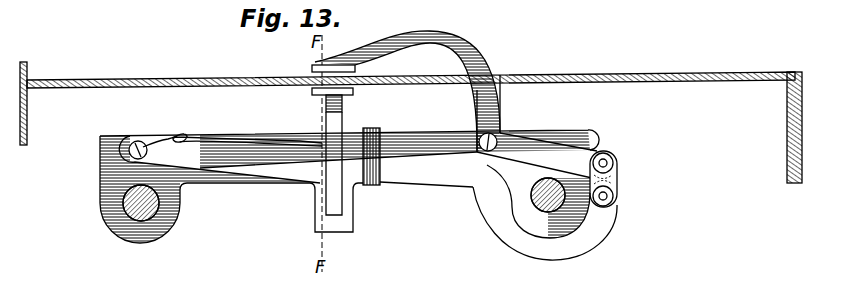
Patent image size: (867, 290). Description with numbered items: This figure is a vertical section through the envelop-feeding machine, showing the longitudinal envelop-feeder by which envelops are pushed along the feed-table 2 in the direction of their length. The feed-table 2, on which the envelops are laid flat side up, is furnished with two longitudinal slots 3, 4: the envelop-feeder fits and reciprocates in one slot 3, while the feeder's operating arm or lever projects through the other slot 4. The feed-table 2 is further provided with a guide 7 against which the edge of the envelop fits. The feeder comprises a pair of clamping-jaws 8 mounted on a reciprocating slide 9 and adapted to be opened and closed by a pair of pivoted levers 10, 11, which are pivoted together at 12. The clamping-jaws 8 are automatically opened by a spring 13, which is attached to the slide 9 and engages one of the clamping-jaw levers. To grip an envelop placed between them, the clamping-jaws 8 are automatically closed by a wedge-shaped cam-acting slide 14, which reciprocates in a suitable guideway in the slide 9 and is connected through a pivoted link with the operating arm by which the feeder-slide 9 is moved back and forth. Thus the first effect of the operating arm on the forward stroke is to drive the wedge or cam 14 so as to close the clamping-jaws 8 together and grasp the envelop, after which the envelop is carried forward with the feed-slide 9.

The feed-table 2 is at (626, 73).
The longitudinal slot 3 is at (407, 90).
The longitudinal slot 4 is at (505, 80).
The guide 7 is at (27, 75).
The clamping-jaws 8 is at (334, 64).
The reciprocating slide 9 is at (222, 183).
The pivoted lever 10 is at (488, 67).
The pivoted lever 11 is at (605, 233).
The pivot 12 is at (618, 181).
The spring 13 is at (236, 136).
The wedge-shaped cam-acting slide 14 is at (345, 211).